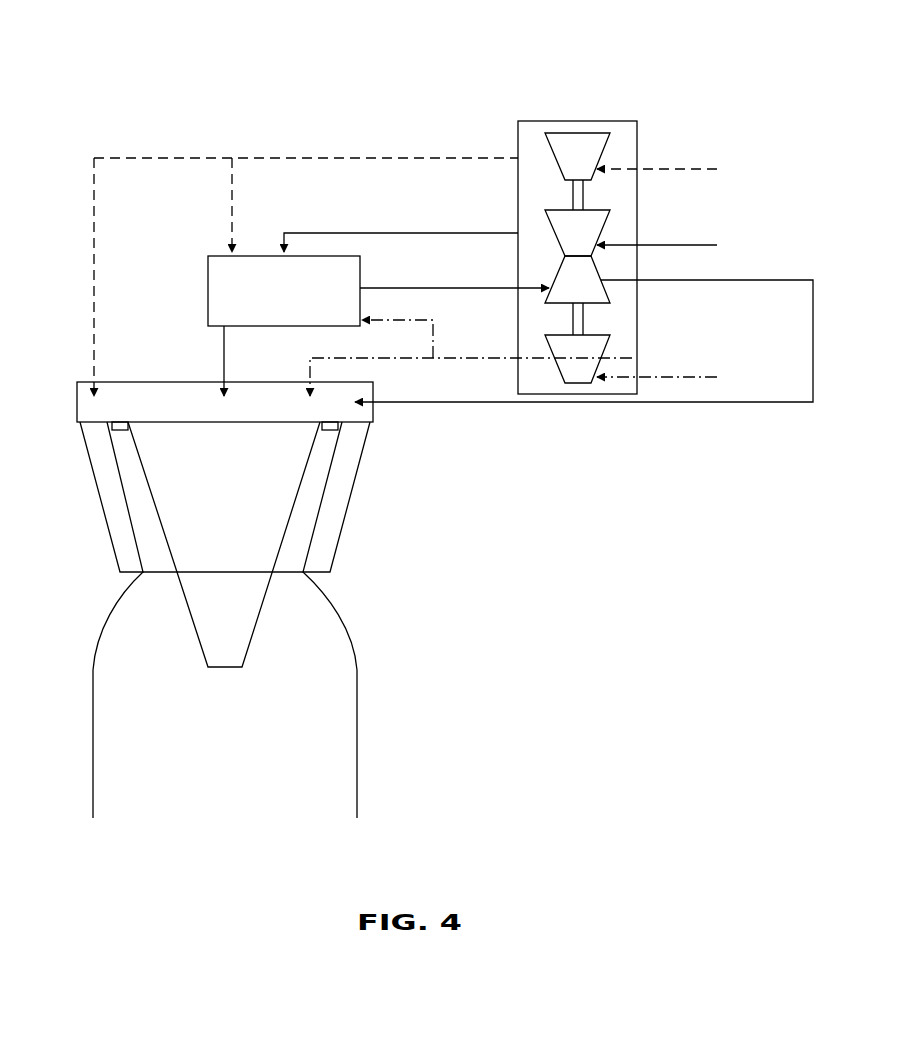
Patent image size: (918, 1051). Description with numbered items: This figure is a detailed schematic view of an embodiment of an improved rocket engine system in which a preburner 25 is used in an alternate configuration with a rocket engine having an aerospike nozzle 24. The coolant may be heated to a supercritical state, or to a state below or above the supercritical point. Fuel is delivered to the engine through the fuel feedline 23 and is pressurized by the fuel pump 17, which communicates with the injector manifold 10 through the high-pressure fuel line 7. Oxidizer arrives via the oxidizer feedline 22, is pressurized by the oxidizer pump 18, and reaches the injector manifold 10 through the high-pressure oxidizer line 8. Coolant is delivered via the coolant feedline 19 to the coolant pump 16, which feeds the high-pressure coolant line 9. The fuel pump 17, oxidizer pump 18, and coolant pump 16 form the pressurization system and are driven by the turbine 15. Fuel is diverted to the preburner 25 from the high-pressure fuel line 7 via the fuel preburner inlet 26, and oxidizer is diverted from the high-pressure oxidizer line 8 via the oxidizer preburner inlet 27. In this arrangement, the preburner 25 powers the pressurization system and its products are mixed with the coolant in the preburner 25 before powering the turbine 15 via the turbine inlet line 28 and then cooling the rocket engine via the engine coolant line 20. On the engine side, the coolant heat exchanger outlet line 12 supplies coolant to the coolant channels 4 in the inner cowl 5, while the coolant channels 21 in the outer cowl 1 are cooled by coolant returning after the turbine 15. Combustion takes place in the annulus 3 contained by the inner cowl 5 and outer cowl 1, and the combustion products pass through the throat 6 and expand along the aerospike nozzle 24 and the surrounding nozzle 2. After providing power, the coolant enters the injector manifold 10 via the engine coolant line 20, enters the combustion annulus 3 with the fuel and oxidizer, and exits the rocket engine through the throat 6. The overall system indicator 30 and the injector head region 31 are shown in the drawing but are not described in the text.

The outer cowl 1 is at (132, 547).
The nozzle 2 is at (93, 665).
The combustion chamber annulus 3 is at (122, 467).
The coolant channels 4 is at (152, 494).
The inner cowl 5 is at (165, 550).
The throat 6 is at (155, 572).
The high-pressure fuel line 7 is at (183, 157).
The high-pressure oxidizer line 8 is at (402, 360).
The high-pressure coolant line 9 is at (323, 232).
The injector manifold 10 is at (110, 428).
The coolant heat exchanger outlet line 12 is at (223, 340).
The turbine 15 is at (562, 267).
The coolant pump 16 is at (562, 244).
The fuel pump 17 is at (563, 167).
The oxidizer pump 18 is at (562, 368).
The coolant feedline 19 is at (683, 244).
The engine coolant line 20 is at (778, 279).
The coolant channels 21 is at (325, 497).
The oxidizer feedline 22 is at (683, 376).
The fuel feedline 23 is at (685, 168).
The aerospike nozzle 24 is at (206, 633).
The preburner 25 is at (207, 285).
The fuel preburner inlet 26 is at (231, 202).
The oxidizer preburner inlet 27 is at (434, 318).
The turbine inlet line 28 is at (399, 288).
The rocket engine system 30 is at (118, 72).
The injector head 31 is at (76, 397).